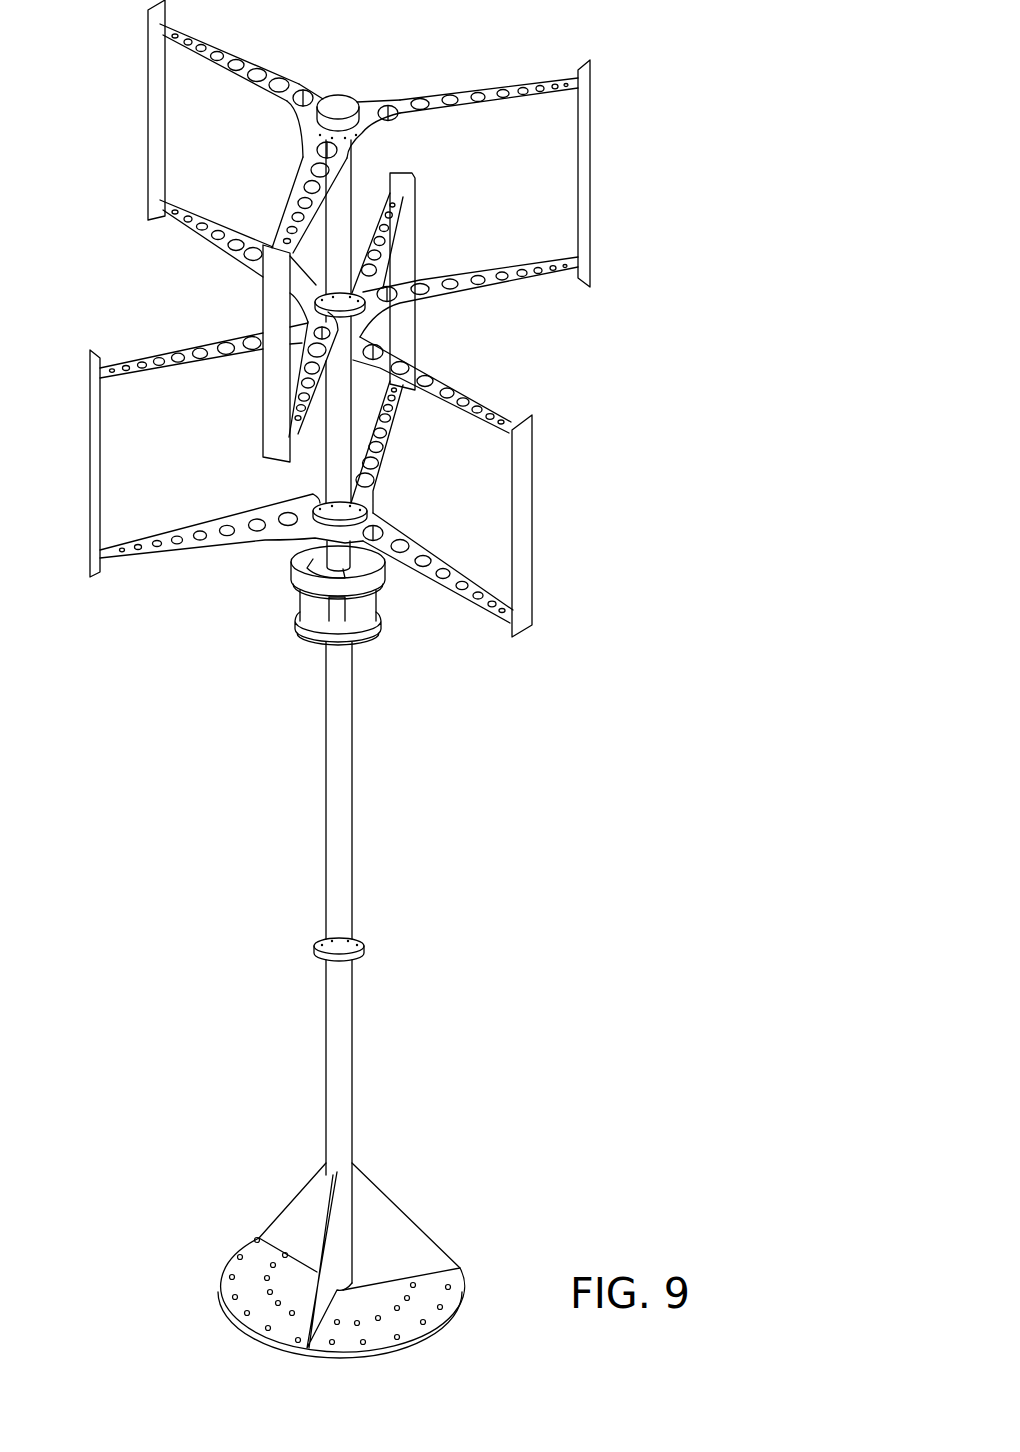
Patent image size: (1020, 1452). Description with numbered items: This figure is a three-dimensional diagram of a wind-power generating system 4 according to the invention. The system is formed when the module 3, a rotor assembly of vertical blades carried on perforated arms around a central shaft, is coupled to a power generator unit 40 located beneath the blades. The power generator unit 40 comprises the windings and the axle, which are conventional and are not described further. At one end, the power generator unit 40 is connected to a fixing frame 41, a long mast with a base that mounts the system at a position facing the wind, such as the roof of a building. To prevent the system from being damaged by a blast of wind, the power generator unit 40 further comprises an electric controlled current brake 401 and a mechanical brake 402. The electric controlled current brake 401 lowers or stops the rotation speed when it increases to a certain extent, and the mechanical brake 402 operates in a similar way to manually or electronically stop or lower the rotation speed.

The module 3 is at (144, 122).
The wind-power generating system 4 is at (493, 684).
The power generator unit 40 is at (327, 619).
The electric controlled current brake 401 is at (335, 622).
The mechanical brake 402 is at (312, 572).
The fixing frame 41 is at (346, 812).